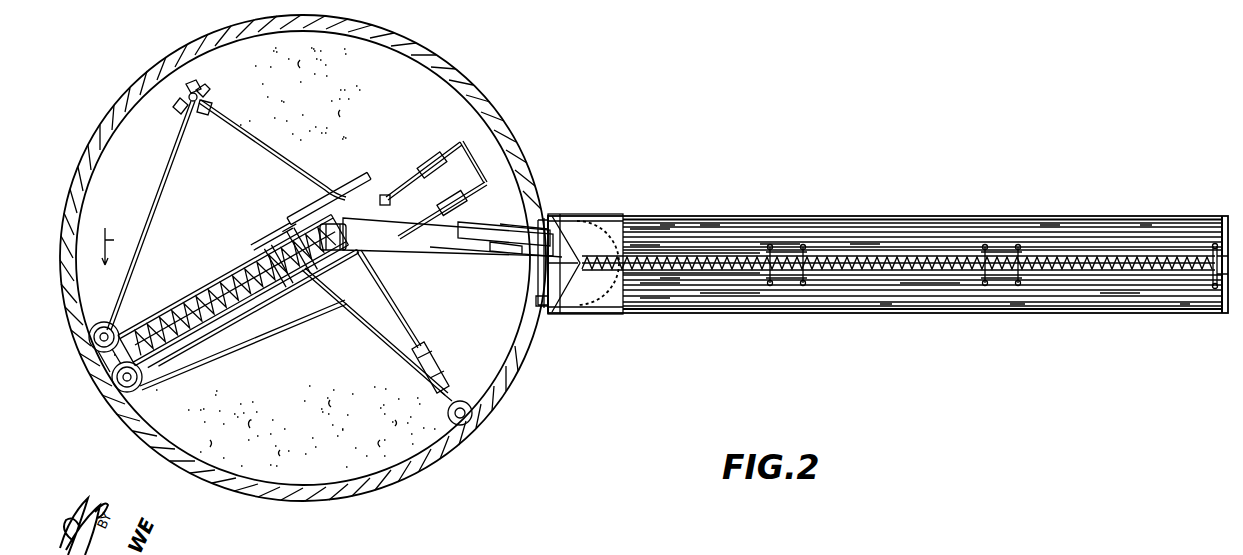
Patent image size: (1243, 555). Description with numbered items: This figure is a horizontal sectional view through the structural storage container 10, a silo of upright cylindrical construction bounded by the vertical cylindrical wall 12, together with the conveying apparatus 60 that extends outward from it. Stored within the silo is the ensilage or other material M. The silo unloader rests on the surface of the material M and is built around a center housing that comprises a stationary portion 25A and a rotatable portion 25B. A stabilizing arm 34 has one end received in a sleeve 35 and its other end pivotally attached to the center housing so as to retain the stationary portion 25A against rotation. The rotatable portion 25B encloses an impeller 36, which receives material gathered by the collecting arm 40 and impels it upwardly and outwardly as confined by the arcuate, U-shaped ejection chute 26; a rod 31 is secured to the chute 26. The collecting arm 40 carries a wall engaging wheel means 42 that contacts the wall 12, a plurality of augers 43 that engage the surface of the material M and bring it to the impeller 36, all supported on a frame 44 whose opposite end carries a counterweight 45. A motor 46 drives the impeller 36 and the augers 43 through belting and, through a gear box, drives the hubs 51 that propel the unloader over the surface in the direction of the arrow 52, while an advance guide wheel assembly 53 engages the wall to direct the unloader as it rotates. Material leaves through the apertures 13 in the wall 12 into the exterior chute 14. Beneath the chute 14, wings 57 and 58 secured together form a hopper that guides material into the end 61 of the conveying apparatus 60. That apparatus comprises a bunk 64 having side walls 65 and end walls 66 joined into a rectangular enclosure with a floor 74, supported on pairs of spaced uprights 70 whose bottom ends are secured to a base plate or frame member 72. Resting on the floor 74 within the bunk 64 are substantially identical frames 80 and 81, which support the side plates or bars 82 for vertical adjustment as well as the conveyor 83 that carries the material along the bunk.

The structural storage container 10 is at (476, 66).
The vertical cylindrical wall 12 is at (120, 100).
The apertures 13 is at (540, 280).
The exterior chute 14 is at (599, 310).
The stationary portion of center housing 25A is at (324, 212).
The rotatable portion of center housing 25B is at (303, 269).
The ejection chute 26 is at (416, 255).
The rod 31 is at (490, 256).
The stabilizing arm 34 is at (478, 216).
The sleeve 35 is at (516, 226).
The impeller 36 is at (296, 250).
The collecting arm 40 is at (221, 337).
The wall engaging wheel means 42 is at (104, 322).
The augers 43 is at (240, 275).
The frame 44 is at (398, 190).
The counterweight 45 is at (450, 197).
The motor 46 is at (385, 195).
The hubs 51 is at (209, 100).
The arrow 52 is at (119, 246).
The advance guide wheel assembly 53 is at (446, 381).
The wing 57 is at (538, 294).
The wing 58 is at (582, 226).
The conveying apparatus 60 is at (716, 252).
The end of conveying apparatus 61 is at (622, 252).
The bunk 64 is at (772, 232).
The side walls 65 is at (921, 232).
The end walls 66 is at (1218, 238).
The uprights 70 is at (1090, 224).
The base plate or frame member 72 is at (1128, 217).
The floor 74 is at (1056, 290).
The frame 80 is at (792, 250).
The frame 81 is at (1211, 293).
The side plates or bars 82 is at (673, 250).
The conveyor 83 is at (866, 260).
The material M is at (315, 465).